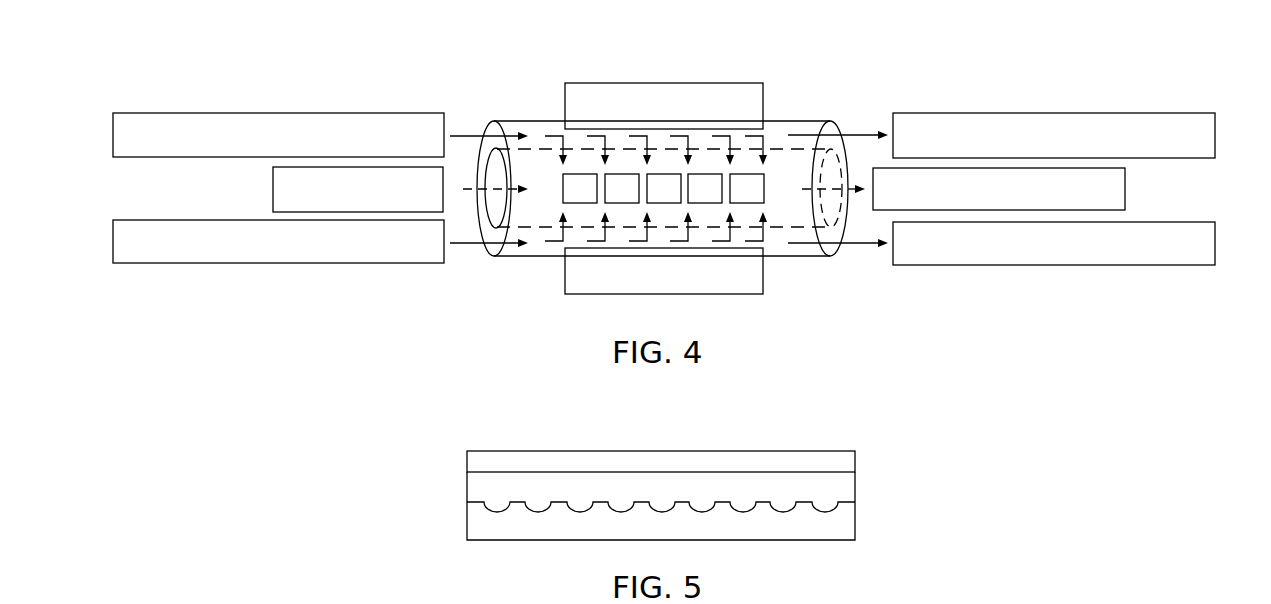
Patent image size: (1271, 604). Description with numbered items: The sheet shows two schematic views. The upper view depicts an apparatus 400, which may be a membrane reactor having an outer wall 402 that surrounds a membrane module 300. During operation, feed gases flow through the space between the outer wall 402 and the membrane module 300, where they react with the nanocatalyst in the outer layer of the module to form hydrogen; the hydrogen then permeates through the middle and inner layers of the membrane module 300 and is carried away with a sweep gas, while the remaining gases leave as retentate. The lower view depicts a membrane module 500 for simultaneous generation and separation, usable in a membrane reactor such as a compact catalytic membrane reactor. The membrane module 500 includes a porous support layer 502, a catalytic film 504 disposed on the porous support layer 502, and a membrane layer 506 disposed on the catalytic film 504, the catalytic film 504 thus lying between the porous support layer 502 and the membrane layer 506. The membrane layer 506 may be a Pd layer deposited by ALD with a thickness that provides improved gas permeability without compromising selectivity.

In FIG. 4, the apparatus 400 is at (495, 68).
In FIG. 4, the outer wall 402 is at (537, 121).
In FIG. 4, the membrane module 300 is at (836, 160).
In FIG. 5, the membrane module 500 is at (479, 417).
In FIG. 5, the porous support layer 502 is at (840, 523).
In FIG. 5, the catalytic film 504 is at (840, 485).
In FIG. 5, the membrane layer 506 is at (840, 465).